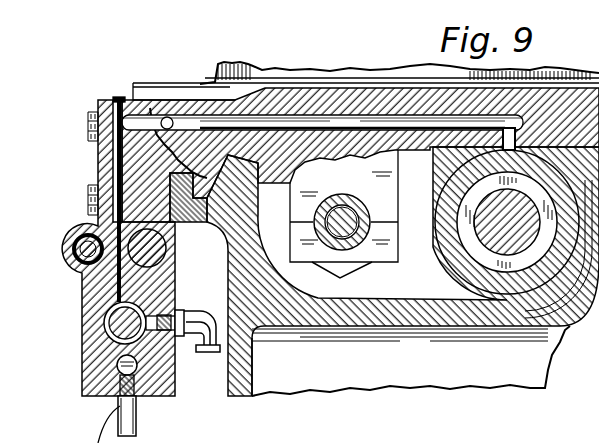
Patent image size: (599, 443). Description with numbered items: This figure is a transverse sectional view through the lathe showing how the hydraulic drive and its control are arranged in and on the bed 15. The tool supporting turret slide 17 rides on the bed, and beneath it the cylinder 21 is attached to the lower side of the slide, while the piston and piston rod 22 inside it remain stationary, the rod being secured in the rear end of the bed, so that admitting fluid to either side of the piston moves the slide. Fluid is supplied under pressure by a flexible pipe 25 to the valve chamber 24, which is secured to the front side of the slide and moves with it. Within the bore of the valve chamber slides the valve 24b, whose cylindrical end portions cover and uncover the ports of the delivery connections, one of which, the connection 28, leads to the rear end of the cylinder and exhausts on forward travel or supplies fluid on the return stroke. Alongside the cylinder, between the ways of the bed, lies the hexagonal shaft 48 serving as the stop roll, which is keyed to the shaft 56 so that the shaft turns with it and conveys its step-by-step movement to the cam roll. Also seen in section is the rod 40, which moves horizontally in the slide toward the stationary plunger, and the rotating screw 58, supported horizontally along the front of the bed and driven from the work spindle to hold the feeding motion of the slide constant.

The bed 15 is at (411, 361).
The turret slide 17 is at (198, 83).
The cylinder 21 is at (462, 277).
The piston and piston rod 22 is at (495, 238).
The valve chamber 24 is at (176, 289).
The valve 24b is at (176, 300).
The pipe 25 is at (199, 353).
The delivery connection 28 is at (369, 122).
The rod 40 is at (80, 241).
The hexagonal shaft 48 is at (328, 247).
The shaft 56 is at (362, 247).
The rotating screw 58 is at (172, 248).